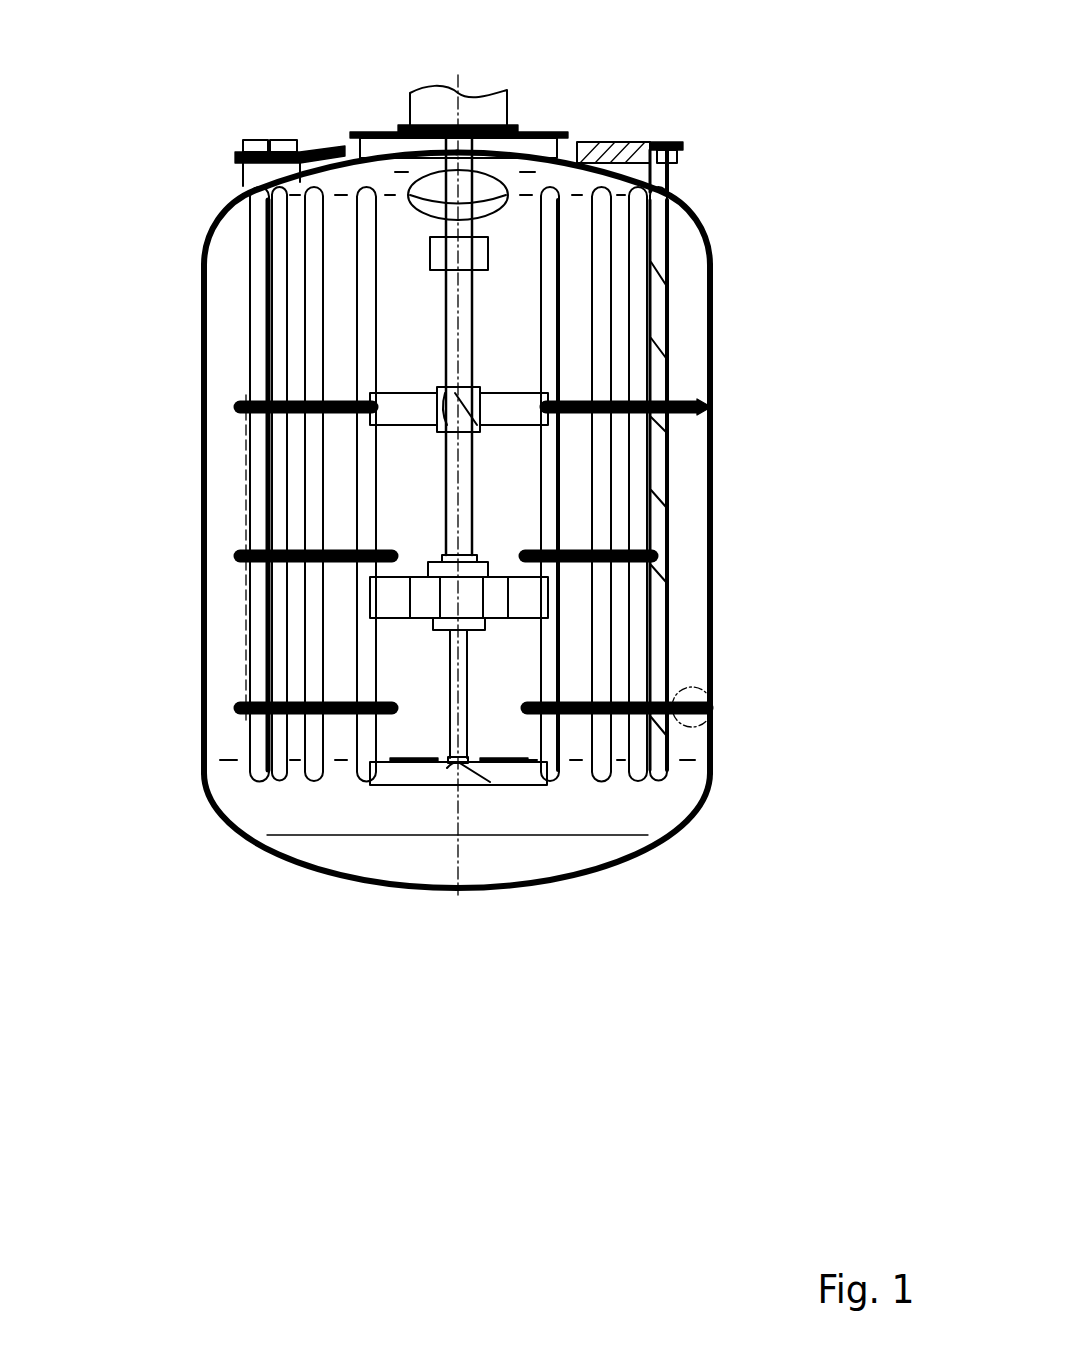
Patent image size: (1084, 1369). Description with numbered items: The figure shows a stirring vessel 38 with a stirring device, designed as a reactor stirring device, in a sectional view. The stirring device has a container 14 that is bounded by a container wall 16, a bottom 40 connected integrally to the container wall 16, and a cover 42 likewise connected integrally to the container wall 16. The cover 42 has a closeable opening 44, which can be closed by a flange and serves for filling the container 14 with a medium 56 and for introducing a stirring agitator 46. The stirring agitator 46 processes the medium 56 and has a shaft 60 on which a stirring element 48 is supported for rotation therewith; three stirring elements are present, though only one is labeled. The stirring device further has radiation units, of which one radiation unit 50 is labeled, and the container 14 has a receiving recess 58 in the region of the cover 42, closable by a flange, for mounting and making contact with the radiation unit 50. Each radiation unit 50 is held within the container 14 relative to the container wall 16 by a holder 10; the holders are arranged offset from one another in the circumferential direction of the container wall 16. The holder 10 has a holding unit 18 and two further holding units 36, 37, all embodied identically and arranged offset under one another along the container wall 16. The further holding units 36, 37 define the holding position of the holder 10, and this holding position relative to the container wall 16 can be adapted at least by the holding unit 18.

The holder 10 is at (246, 515).
The container 14 is at (697, 213).
The container wall 16 is at (713, 577).
The holding unit 18 is at (240, 555).
The further holding unit 36 is at (240, 707).
The further holding unit 37 is at (245, 404).
The stirring vessel 38 is at (202, 135).
The bottom 40 is at (620, 860).
The cover 42 is at (600, 160).
The opening 44 is at (540, 152).
The stirring agitator 46 is at (474, 660).
The stirring element 48 is at (482, 408).
The radiation unit 50 is at (243, 233).
The medium 56 is at (510, 295).
The receiving recess 58 is at (256, 178).
The shaft 60 is at (463, 507).